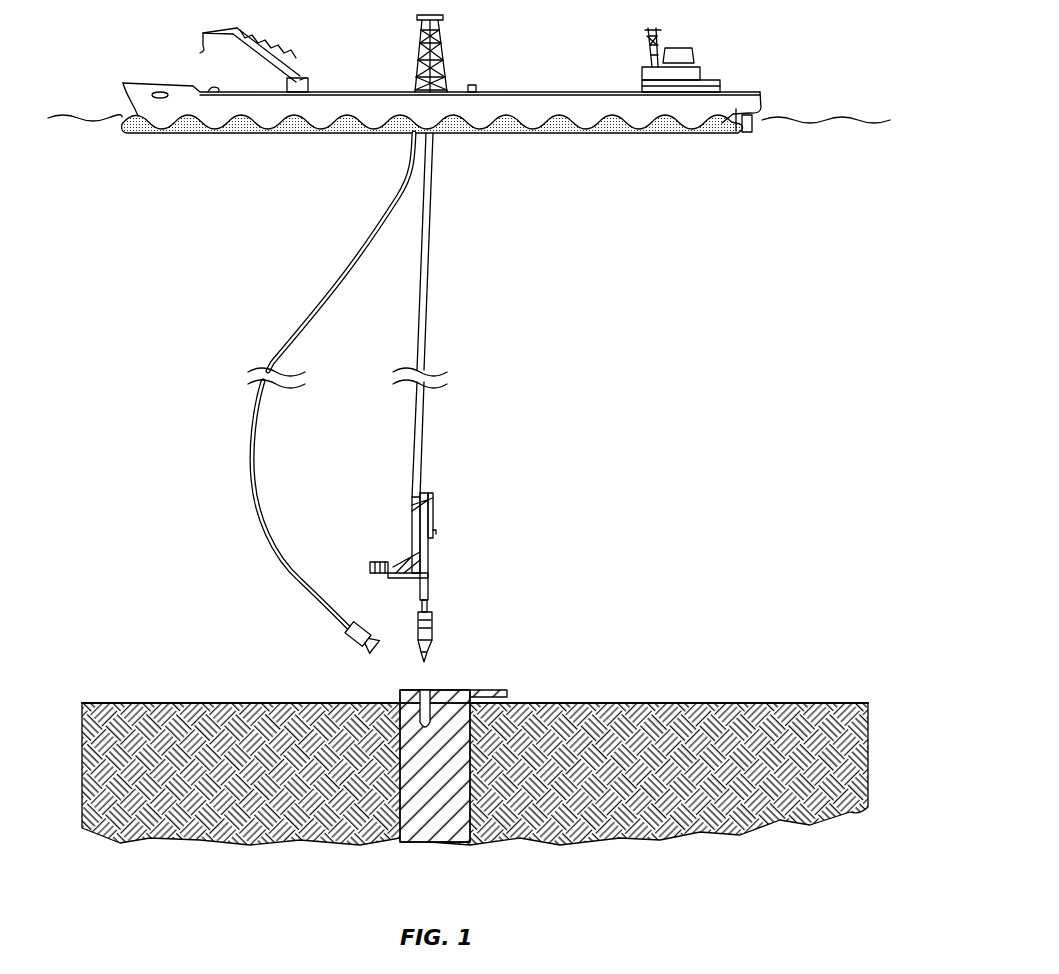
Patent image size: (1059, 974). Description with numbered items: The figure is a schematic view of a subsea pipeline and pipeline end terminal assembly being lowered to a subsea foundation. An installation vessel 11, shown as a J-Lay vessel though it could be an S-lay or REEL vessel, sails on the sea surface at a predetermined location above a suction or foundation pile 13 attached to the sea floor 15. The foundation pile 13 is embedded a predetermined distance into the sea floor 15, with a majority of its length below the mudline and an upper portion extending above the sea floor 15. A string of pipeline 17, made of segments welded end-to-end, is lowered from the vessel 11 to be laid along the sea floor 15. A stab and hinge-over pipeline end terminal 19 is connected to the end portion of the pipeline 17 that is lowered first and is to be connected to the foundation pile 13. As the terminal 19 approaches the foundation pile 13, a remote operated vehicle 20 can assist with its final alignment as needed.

The installation vessel 11 is at (740, 84).
The pipeline 17 is at (427, 312).
The stab and hinge-over pipeline end terminal (PLET) 19 is at (430, 590).
The remote operated vehicle (ROV) 20 is at (357, 643).
The foundation pile 13 is at (477, 687).
The sea floor 15 is at (652, 703).